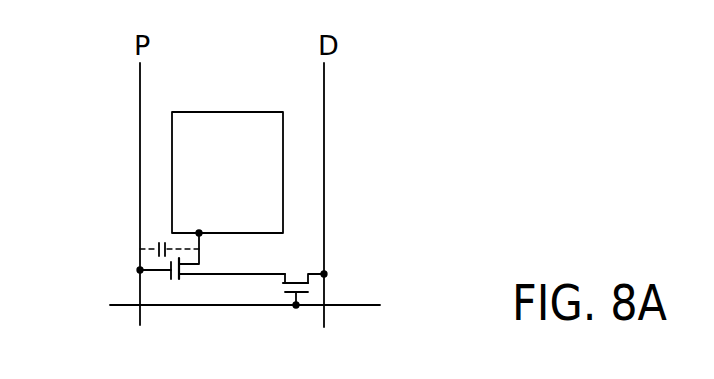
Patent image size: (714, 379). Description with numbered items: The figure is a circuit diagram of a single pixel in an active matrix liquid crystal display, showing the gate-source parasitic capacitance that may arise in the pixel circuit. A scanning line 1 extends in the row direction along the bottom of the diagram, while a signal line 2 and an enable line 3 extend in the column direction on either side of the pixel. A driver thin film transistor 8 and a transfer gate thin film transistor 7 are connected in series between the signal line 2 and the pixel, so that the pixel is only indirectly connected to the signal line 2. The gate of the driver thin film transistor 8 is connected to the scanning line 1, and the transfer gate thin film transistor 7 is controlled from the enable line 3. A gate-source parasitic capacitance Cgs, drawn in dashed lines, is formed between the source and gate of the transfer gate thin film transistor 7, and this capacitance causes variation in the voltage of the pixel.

The scanning line 1 is at (347, 305).
The signal line 2 is at (323, 148).
The enable line 3 is at (140, 78).
The transfer gate thin film transistor 7 is at (186, 287).
The driver thin film transistor 8 is at (315, 295).
The gate-source parasitic capacitance Cgs is at (160, 243).